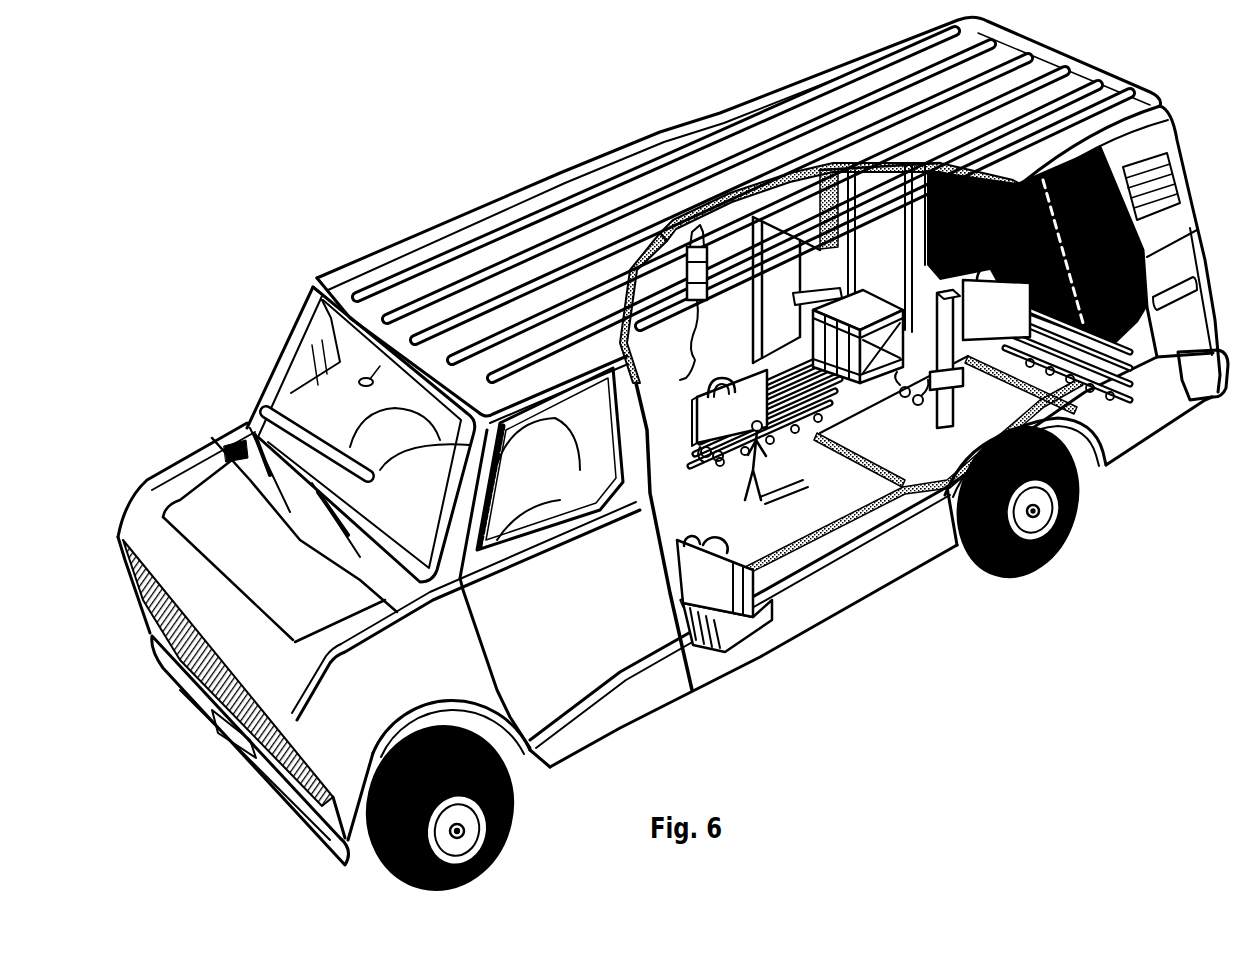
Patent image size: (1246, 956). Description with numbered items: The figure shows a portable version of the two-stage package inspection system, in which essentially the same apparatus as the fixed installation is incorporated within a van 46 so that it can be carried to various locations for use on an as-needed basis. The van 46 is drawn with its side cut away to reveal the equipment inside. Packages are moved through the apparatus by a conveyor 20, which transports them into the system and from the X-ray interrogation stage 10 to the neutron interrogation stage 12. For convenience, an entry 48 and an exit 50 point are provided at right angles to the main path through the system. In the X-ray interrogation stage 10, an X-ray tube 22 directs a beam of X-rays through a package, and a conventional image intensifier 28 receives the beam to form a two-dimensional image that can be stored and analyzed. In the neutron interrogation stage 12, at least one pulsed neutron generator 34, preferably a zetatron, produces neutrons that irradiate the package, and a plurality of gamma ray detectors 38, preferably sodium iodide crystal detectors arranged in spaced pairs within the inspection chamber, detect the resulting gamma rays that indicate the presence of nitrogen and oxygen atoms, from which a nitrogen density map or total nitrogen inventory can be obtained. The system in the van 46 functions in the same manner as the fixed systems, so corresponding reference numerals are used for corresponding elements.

The X-ray interrogation stage 10 is at (880, 247).
The neutron interrogation stage 12 is at (767, 289).
The conveyor 20 is at (1023, 377).
The X-ray tube 22 is at (677, 380).
The image intensifier 28 is at (822, 287).
The pulsed neutron generator 34 is at (690, 281).
The gamma ray detectors 38 is at (755, 490).
The van 46 is at (490, 199).
The entry point 48 is at (740, 637).
The exit point 50 is at (1140, 420).